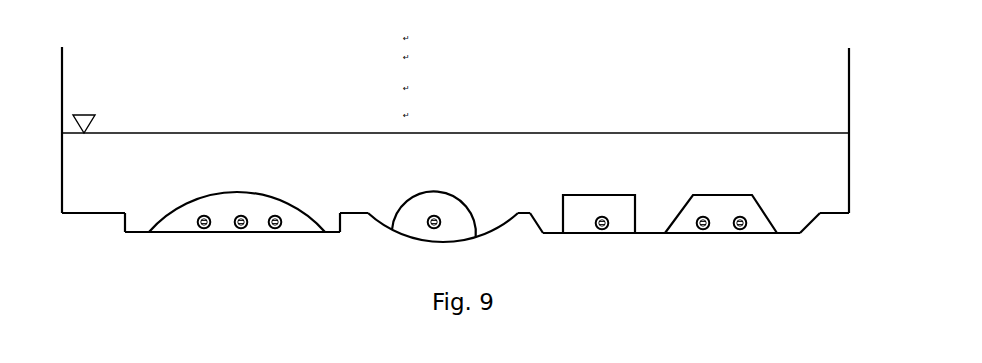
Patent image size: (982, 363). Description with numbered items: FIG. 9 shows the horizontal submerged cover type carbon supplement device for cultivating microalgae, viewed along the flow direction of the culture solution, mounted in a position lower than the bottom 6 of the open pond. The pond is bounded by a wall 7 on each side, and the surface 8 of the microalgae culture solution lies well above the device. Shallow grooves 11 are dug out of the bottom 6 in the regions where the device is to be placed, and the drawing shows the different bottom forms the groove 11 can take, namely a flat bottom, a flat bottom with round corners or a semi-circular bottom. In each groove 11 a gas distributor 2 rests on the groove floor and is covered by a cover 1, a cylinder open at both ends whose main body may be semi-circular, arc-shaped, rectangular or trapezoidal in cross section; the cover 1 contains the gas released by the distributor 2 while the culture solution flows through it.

The cover 1 is at (282, 193).
The gas distributor 2 is at (287, 218).
The bottom of an open pond 6 is at (97, 210).
The wall of an open pond 7 is at (67, 168).
The surface of microalgae culture solution 8 is at (107, 132).
The shallow groove 11 is at (137, 228).